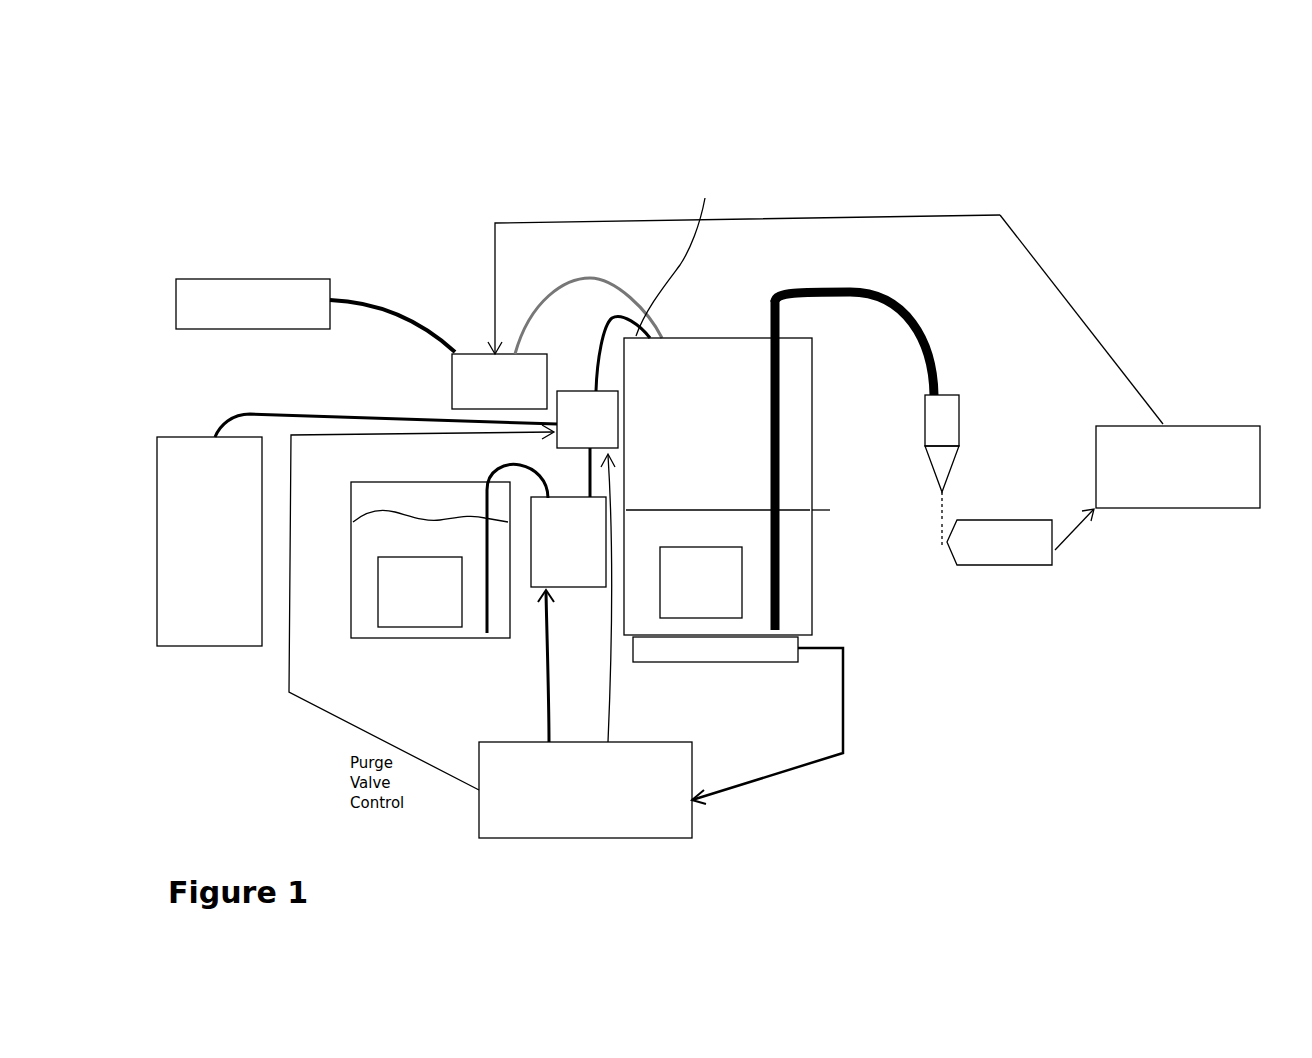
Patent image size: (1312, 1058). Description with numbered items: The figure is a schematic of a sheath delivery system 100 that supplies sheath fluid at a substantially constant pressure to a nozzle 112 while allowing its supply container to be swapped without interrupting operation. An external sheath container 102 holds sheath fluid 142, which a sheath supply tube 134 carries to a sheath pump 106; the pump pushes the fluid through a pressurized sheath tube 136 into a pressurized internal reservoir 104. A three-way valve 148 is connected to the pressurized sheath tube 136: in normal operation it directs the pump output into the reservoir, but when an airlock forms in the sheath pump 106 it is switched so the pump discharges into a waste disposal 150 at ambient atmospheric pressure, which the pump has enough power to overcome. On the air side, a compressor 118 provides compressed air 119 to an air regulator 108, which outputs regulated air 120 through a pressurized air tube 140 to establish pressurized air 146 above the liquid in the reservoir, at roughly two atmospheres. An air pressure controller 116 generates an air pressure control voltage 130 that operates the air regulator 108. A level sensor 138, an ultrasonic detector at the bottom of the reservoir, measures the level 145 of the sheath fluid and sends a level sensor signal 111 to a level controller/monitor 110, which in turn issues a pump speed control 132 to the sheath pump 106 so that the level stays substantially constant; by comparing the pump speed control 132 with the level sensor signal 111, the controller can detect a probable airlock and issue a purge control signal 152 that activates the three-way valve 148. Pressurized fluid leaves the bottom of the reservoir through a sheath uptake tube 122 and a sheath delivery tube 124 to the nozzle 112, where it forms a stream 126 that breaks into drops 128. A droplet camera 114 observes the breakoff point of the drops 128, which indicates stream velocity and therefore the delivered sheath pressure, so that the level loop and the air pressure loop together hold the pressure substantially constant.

The sheath delivery system 100 is at (1028, 122).
The external sheath container 102 is at (378, 638).
The pressurized internal reservoir 104 is at (812, 602).
The sheath pump 106 is at (565, 587).
The air regulator 108 is at (452, 372).
The level controller/monitor 110 is at (692, 760).
The level sensor signal 111 is at (843, 728).
The nozzle 112 is at (961, 408).
The droplet camera 114 is at (998, 520).
The air pressure controller 116 is at (1212, 423).
The compressor 118 is at (220, 278).
The compressed air 119 is at (375, 310).
The regulated air 120 is at (643, 275).
The sheath uptake tube 122 is at (766, 362).
The sheath delivery tube 124 is at (933, 347).
The stream 126 is at (940, 505).
The drops 128 is at (942, 584).
The air pressure control voltage 130 is at (1053, 280).
The pump speed control 132 is at (542, 635).
The sheath supply tube 134 is at (543, 460).
The pressurized sheath tube 136 is at (698, 231).
The level sensor 138 is at (757, 663).
The pressurized air tube 140 is at (535, 306).
The sheath fluid 142 is at (581, 568).
The level 145 is at (815, 510).
The pressurized air 146 is at (672, 474).
The three-way valve 148 is at (582, 390).
The waste disposal 150 is at (156, 456).
The purge control signal 152 is at (613, 692).